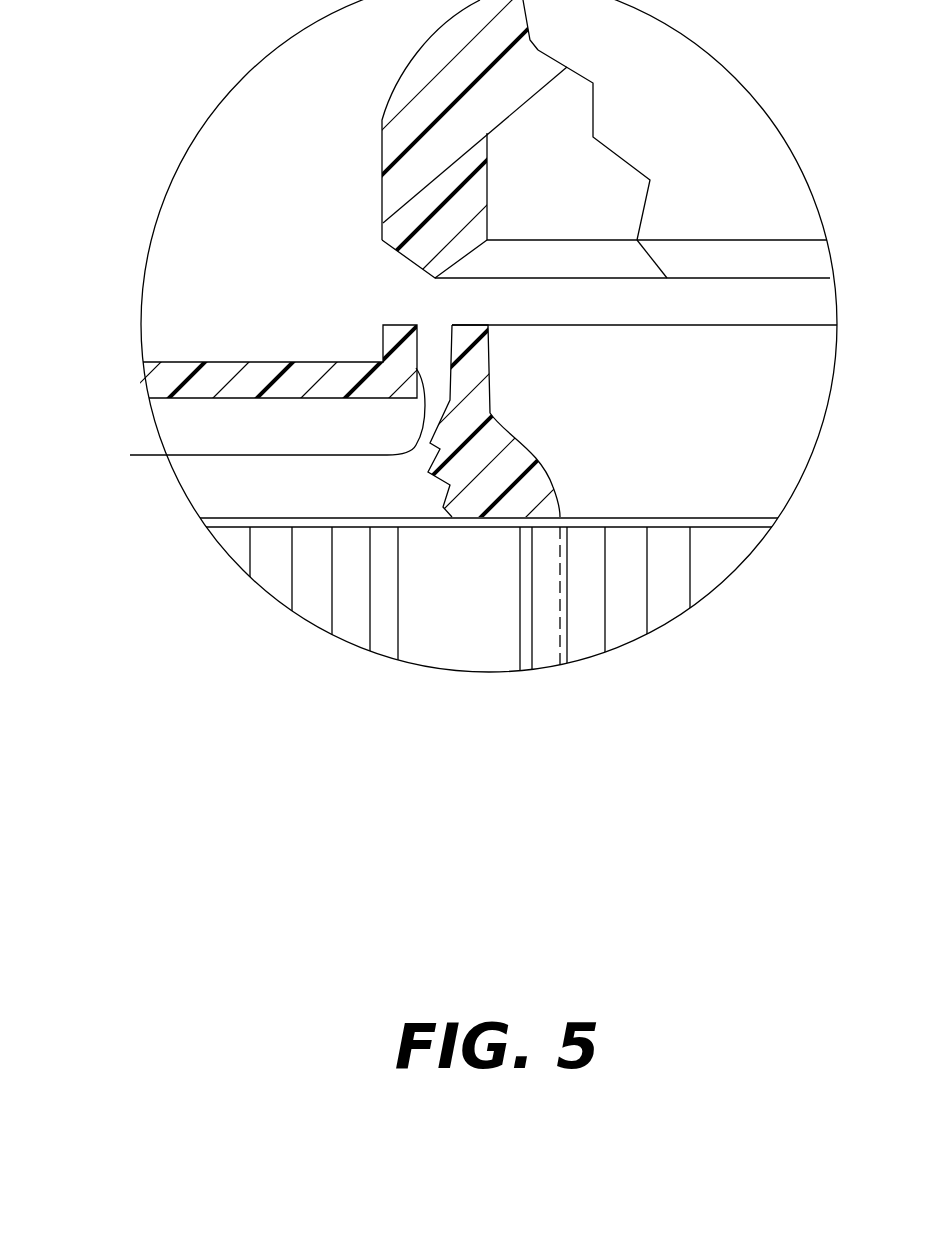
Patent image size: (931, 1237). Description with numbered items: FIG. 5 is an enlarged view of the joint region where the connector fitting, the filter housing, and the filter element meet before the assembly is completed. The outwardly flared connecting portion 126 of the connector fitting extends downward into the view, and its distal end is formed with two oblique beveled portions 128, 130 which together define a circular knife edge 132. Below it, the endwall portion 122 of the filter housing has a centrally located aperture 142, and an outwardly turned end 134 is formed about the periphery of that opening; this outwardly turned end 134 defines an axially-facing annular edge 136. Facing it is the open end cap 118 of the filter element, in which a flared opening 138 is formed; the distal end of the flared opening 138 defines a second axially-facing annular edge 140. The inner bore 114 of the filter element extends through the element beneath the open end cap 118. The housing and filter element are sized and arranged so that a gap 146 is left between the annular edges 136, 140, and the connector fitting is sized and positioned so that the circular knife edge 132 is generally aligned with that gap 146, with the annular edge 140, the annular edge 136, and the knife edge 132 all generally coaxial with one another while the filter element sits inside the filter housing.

The inner bore 114 is at (562, 632).
The open end cap 118 is at (240, 485).
The endwall portion 122 is at (240, 362).
The outwardly flared connecting portion 126 is at (382, 148).
The oblique beveled portion 128 is at (402, 255).
The oblique beveled portion 130 is at (472, 255).
The circular knife edge 132 is at (435, 278).
The outwardly turned end 134 is at (383, 350).
The axially-facing annular edge 136 is at (412, 324).
The flared opening 138 is at (493, 415).
The axially-facing annular edge 140 is at (470, 328).
The central aperture 142 is at (413, 413).
The gap 146 is at (432, 333).